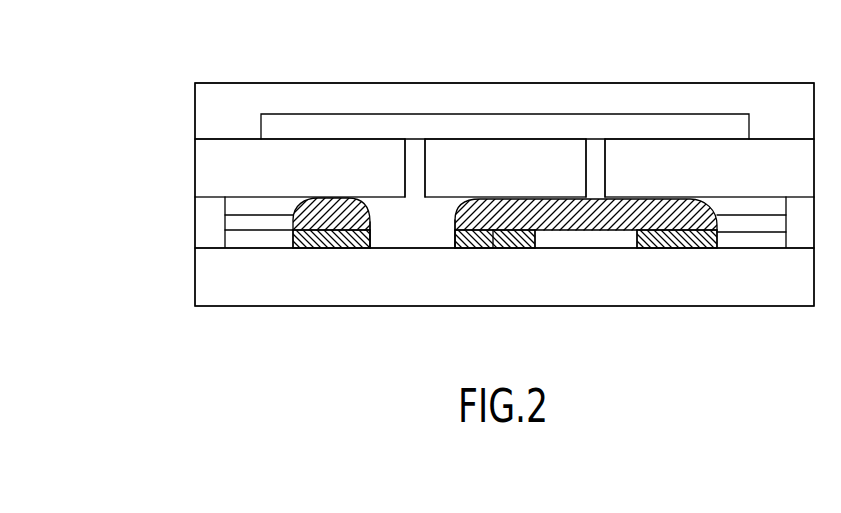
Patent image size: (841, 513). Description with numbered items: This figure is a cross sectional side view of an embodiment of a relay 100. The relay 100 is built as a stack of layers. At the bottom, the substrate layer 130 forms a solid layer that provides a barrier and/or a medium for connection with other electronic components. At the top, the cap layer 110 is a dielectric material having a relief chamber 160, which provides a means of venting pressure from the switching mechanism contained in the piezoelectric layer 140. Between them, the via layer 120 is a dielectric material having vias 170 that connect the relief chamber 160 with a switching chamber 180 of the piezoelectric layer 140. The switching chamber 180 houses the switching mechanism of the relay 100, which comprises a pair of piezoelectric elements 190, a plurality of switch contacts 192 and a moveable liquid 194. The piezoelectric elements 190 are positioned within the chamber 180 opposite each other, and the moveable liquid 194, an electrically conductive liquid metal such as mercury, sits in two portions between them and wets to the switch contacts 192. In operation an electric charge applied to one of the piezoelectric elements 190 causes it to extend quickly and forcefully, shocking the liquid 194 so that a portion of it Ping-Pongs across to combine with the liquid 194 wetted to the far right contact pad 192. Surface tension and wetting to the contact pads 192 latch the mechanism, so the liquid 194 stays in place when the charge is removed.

The relay 100 is at (163, 328).
The cap layer 110 is at (195, 113).
The via layer 120 is at (195, 168).
The substrate layer 130 is at (195, 287).
The piezoelectric layer 140 is at (195, 231).
The relief chamber 160 is at (329, 126).
The vias 170 is at (416, 163).
The switching chamber 180 is at (423, 235).
The piezoelectric elements 190 is at (266, 223).
The switch contacts 192 is at (320, 232).
The moveable liquid 194 is at (360, 223).